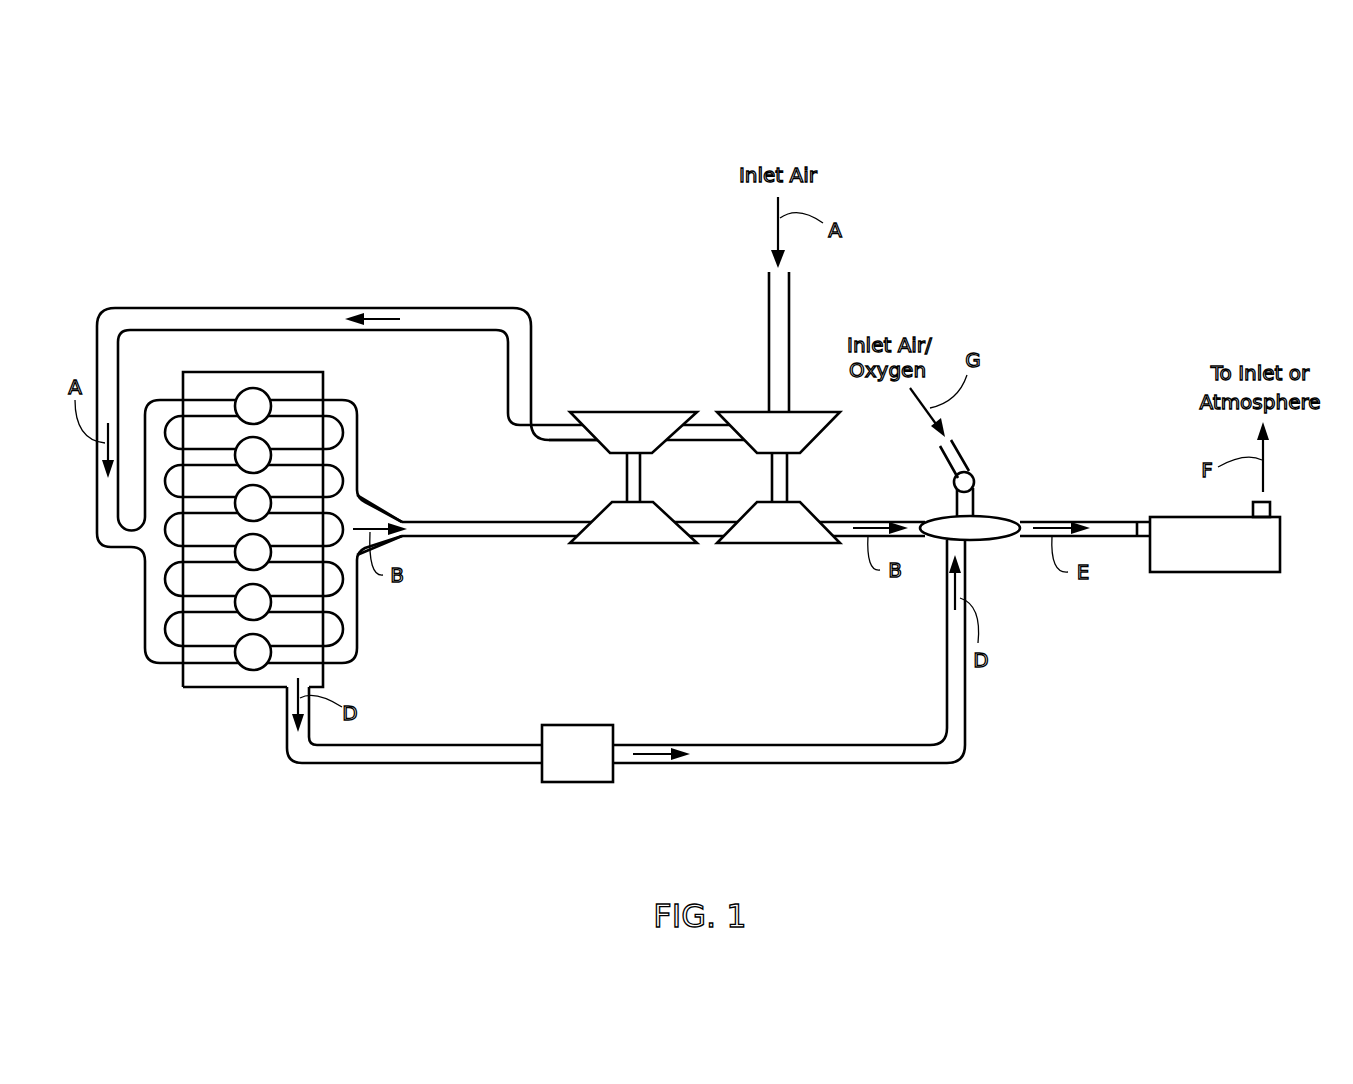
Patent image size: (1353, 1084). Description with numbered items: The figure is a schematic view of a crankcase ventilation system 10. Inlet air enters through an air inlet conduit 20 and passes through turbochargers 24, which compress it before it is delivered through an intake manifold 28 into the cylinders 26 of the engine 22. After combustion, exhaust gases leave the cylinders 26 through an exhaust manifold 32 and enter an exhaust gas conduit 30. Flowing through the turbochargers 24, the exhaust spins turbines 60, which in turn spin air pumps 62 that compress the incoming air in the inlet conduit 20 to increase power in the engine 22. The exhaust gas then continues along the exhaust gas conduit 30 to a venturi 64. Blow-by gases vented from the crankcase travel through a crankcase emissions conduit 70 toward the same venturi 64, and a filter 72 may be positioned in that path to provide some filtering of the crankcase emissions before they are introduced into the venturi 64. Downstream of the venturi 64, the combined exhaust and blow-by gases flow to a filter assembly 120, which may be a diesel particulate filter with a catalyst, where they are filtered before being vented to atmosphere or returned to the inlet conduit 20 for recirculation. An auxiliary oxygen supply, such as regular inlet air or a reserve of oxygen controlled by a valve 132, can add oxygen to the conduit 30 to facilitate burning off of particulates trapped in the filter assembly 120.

The system 10 is at (337, 190).
The air inlet conduit 20 is at (432, 307).
The engine 22 is at (230, 558).
The turbochargers 24 is at (705, 431).
The cylinders 26 is at (252, 388).
The intake manifold 28 is at (132, 547).
The exhaust gas conduit 30 is at (473, 538).
The exhaust manifold 32 is at (378, 503).
The turbines 60 is at (760, 545).
The air pumps 62 is at (758, 410).
The venturi 64 is at (985, 515).
The crankcase emissions conduit 70 is at (858, 737).
The filter 72 is at (578, 725).
The filter assembly 120 is at (970, 448).
The valve 132 is at (952, 487).